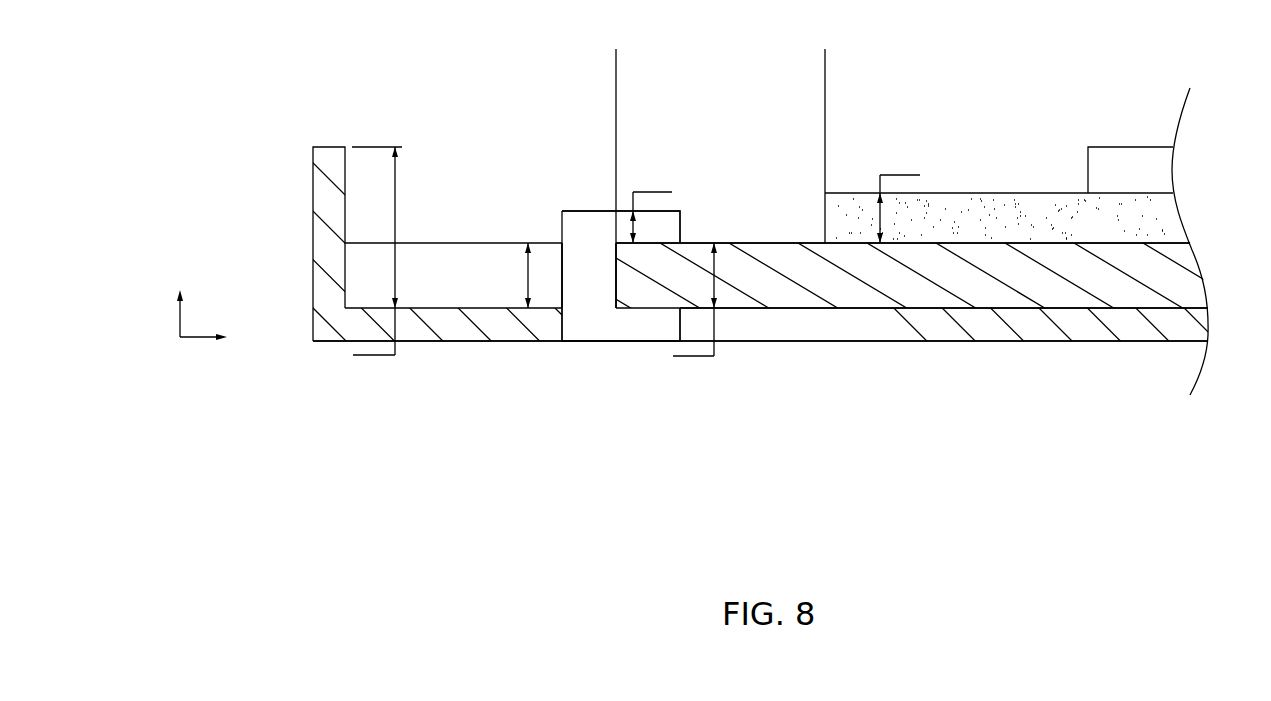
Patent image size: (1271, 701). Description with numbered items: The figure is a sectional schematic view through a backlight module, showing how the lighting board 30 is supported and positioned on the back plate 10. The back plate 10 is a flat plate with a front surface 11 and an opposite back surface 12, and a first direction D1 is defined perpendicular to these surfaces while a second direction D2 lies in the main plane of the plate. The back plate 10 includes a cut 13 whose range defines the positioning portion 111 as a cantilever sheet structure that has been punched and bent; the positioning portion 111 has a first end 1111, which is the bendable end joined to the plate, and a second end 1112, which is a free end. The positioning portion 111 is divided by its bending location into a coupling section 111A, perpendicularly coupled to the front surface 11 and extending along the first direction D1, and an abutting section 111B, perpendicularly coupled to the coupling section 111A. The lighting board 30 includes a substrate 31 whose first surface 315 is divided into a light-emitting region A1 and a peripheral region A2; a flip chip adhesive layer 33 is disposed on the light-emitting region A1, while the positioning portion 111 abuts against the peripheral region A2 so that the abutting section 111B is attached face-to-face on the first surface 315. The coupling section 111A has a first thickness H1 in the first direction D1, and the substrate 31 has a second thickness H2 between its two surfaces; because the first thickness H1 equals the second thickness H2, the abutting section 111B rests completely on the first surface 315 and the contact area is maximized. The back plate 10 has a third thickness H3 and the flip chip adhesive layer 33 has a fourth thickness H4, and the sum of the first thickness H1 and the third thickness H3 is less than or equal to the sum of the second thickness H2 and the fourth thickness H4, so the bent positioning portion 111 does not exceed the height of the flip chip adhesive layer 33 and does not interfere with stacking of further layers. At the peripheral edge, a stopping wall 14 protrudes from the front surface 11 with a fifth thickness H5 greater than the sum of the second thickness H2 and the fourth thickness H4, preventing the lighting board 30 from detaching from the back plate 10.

The back plate 10 is at (940, 333).
The front surface 11 is at (787, 308).
The back surface 12 is at (1090, 341).
The cut 13 is at (615, 328).
The stopping wall 14 is at (318, 157).
The positioning portion 111 is at (578, 112).
The coupling section 111A is at (600, 277).
The abutting section 111B is at (575, 218).
The first end 1111 is at (580, 307).
The second end 1112 is at (672, 243).
The lighting board 30 is at (881, 222).
The substrate 31 is at (1177, 274).
The first surface 315 is at (730, 243).
The flip chip adhesive layer 33 is at (1010, 203).
The light-emitting region A1 is at (1183, 55).
The peripheral region A2 is at (825, 55).
The first thickness H1 is at (509, 275).
The second thickness H2 is at (695, 315).
The third thickness H3 is at (651, 202).
The fourth thickness H4 is at (898, 196).
The fifth thickness H5 is at (377, 267).
The first direction D1 is at (187, 300).
The second direction D2 is at (221, 335).